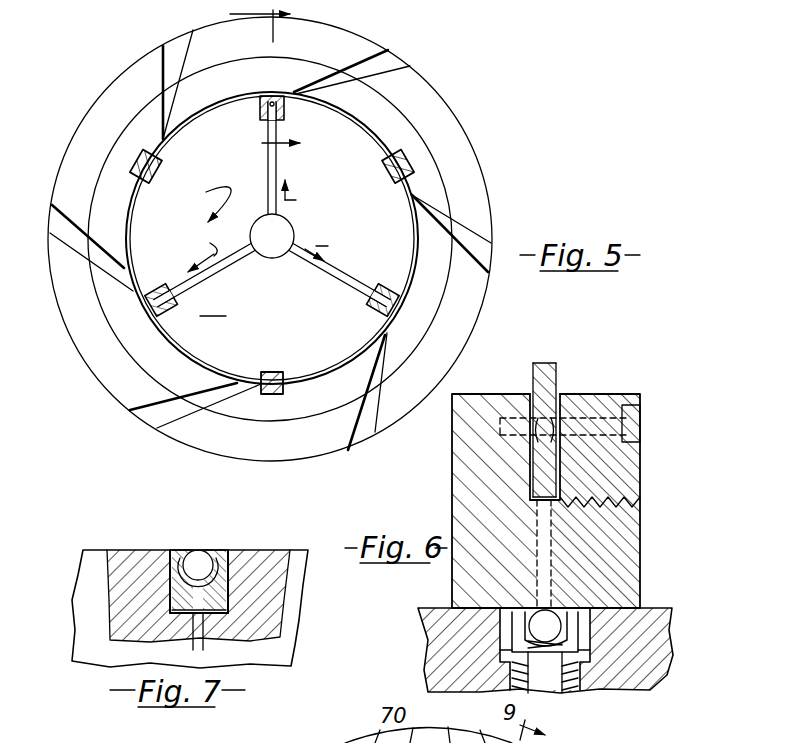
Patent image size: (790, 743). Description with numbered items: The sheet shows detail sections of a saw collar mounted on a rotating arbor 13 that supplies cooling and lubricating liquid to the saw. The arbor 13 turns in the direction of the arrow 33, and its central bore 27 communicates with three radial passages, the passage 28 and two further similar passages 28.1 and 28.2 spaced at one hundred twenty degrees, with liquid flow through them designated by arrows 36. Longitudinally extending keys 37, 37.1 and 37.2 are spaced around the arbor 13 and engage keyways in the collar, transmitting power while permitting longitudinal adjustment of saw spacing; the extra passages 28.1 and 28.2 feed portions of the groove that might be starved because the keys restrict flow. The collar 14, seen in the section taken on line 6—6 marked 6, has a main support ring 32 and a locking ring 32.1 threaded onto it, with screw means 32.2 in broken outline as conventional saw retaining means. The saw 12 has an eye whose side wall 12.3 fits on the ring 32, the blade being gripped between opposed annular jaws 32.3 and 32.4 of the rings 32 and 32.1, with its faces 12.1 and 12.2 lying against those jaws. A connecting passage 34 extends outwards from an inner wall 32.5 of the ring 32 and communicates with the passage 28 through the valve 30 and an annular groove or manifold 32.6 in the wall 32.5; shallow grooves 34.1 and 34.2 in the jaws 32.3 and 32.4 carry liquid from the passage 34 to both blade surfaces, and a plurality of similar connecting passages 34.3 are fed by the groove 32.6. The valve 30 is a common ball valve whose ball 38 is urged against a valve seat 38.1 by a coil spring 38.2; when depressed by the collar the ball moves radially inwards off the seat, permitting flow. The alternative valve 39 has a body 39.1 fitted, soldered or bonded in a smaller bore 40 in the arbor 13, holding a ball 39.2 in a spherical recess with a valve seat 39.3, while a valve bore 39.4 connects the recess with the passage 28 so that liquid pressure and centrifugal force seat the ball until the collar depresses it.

In FIG. 5, the section line 6— 6 is at (248, 79).
In FIG. 6, the saw 12 is at (549, 360).
In FIG. 6, the blade side face 12.1 is at (558, 374).
In FIG. 6, the blade side face 12.2 is at (533, 372).
In FIG. 6, the side wall 12.3 is at (531, 500).
In FIG. 5, the arbor 13 is at (214, 304).
In FIG. 7, the arbor 13 is at (304, 548).
In FIG. 6, the collar 14 is at (633, 392).
In FIG. 5, the bore 27 is at (293, 230).
In FIG. 5, the radial passage 28 is at (283, 160).
In FIG. 6, the radial passage 28 is at (552, 692).
In FIG. 7, the radial passage 28 is at (193, 633).
In FIG. 5, the radial passage 28.1 is at (339, 280).
In FIG. 5, the radial passage 28.2 is at (222, 279).
In FIG. 5, the valve 30 is at (262, 108).
In FIG. 6, the valve 30 is at (490, 665).
In FIG. 5, the main support ring 32 is at (408, 128).
In FIG. 6, the main support ring 32 is at (452, 463).
In FIG. 5, the locking ring 32.1 is at (434, 99).
In FIG. 6, the locking ring 32.1 is at (624, 400).
In FIG. 6, the screw means 32.2 is at (636, 433).
In FIG. 6, the annular jaw 32.3 is at (534, 452).
In FIG. 6, the annular jaw 32.4 is at (555, 452).
In FIG. 6, the inner wall 32.5 is at (545, 650).
In FIG. 5, the annular groove 32.6 is at (357, 121).
In FIG. 5, the arrow 33 is at (201, 200).
In FIG. 5, the connecting passage 34 is at (318, 95).
In FIG. 6, the connecting passage 34 is at (536, 550).
In FIG. 6, the shallow groove 34.1 is at (529, 397).
In FIG. 5, the shallow groove 34.2 is at (389, 61).
In FIG. 6, the shallow groove 34.2 is at (561, 397).
In FIG. 5, the connecting passages 34.3 is at (163, 119).
In FIG. 5, the arrows 36 is at (272, 226).
In FIG. 5, the key 37 is at (390, 172).
In FIG. 5, the key 37.1 is at (268, 368).
In FIG. 5, the key 37.2 is at (163, 168).
In FIG. 6, the ball 38 is at (562, 608).
In FIG. 6, the valve seat 38.1 is at (536, 584).
In FIG. 6, the coil spring 38.2 is at (500, 641).
In FIG. 7, the alternative valve 39 is at (234, 540).
In FIG. 7, the body 39.1 is at (220, 599).
In FIG. 7, the ball 39.2 is at (230, 533).
In FIG. 7, the valve seat 39.3 is at (231, 553).
In FIG. 7, the valve bore 39.4 is at (190, 598).
In FIG. 7, the bore 40 is at (194, 560).